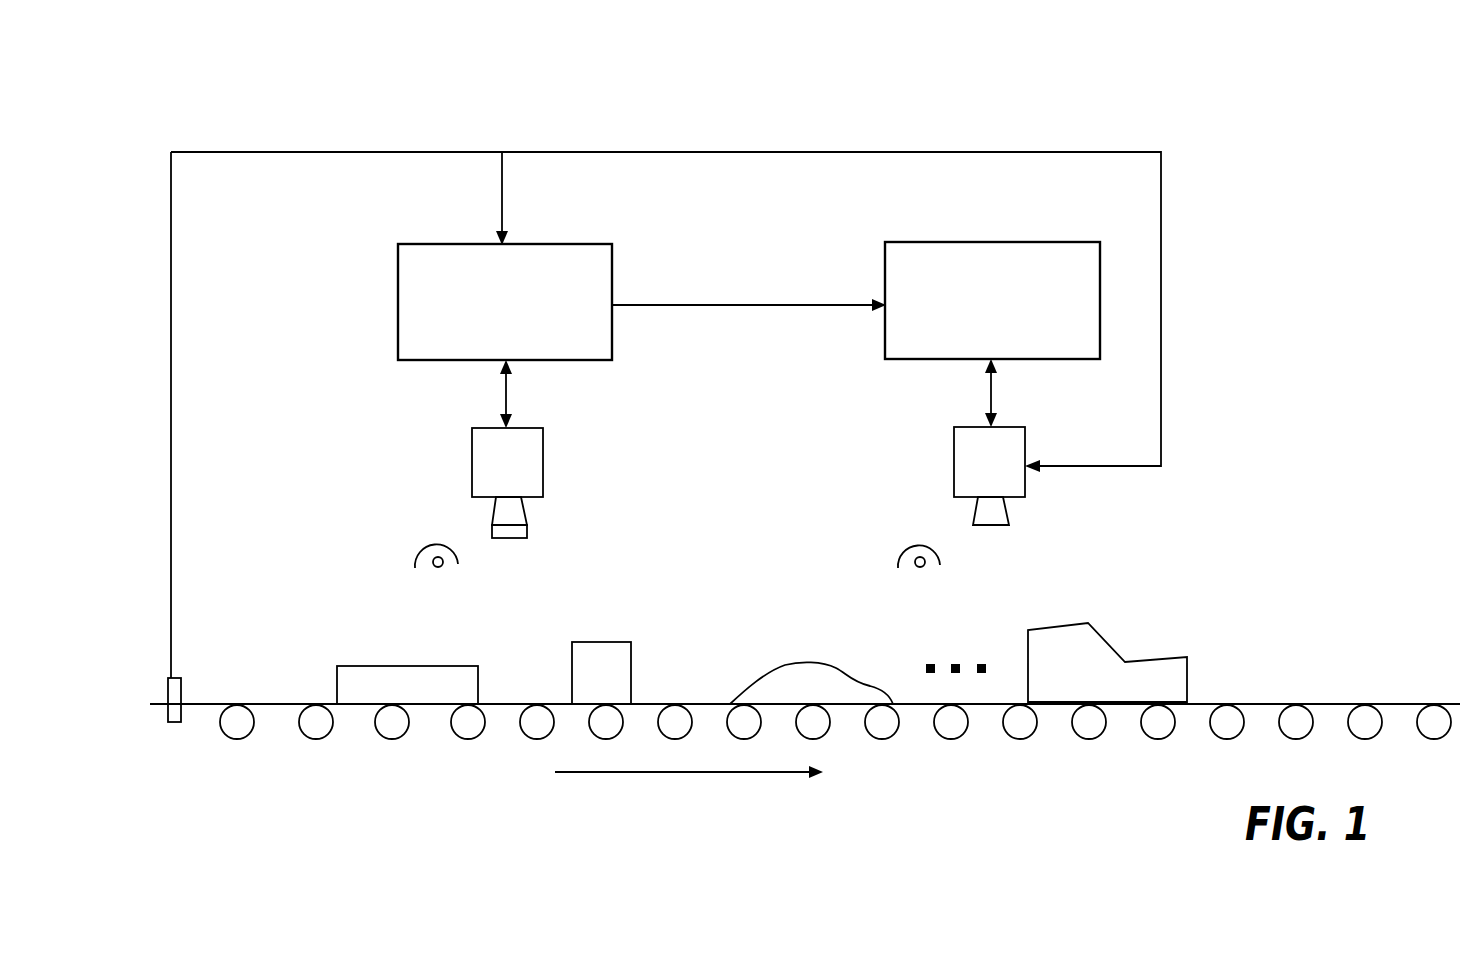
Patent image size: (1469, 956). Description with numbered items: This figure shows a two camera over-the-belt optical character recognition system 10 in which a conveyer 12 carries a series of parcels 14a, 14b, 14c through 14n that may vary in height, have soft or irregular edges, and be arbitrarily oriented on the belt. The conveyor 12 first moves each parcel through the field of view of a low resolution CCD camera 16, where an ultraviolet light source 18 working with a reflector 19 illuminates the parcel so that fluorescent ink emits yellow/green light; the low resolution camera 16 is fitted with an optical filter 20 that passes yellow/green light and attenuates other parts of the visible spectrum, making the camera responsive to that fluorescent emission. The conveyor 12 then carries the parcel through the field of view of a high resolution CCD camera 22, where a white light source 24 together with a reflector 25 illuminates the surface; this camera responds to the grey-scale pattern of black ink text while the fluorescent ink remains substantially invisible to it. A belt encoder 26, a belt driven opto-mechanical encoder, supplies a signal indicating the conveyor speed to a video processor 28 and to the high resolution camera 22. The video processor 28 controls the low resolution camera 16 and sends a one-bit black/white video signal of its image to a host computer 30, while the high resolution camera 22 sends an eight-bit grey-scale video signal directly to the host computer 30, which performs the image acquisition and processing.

The two camera over-the-belt optical character recognition (OCR) system 10 is at (300, 114).
The conveyer 12 is at (199, 704).
The parcel 14a is at (428, 666).
The parcel 14b is at (598, 642).
The parcel 14c is at (793, 663).
The parcel 14n is at (1160, 657).
The low resolution CCD camera 16 is at (472, 452).
The ultraviolet light source 18 is at (433, 566).
The reflector 19 is at (433, 550).
The optical filter 20 is at (527, 536).
The high resolution CCD camera 22 is at (954, 450).
The white light source 24 is at (915, 566).
The reflector 25 is at (912, 545).
The belt encoder 26 is at (175, 722).
The video processor 28 is at (505, 302).
The host computer 30 is at (992, 300).